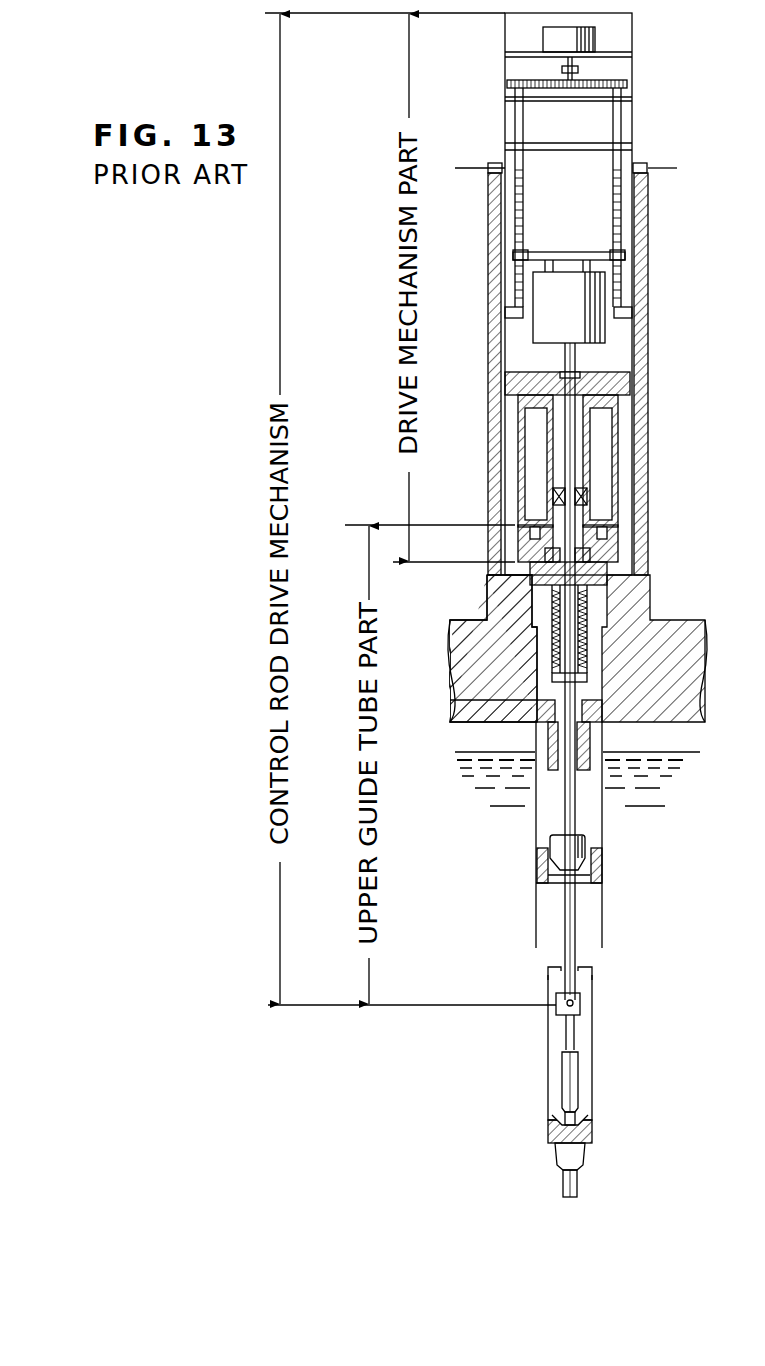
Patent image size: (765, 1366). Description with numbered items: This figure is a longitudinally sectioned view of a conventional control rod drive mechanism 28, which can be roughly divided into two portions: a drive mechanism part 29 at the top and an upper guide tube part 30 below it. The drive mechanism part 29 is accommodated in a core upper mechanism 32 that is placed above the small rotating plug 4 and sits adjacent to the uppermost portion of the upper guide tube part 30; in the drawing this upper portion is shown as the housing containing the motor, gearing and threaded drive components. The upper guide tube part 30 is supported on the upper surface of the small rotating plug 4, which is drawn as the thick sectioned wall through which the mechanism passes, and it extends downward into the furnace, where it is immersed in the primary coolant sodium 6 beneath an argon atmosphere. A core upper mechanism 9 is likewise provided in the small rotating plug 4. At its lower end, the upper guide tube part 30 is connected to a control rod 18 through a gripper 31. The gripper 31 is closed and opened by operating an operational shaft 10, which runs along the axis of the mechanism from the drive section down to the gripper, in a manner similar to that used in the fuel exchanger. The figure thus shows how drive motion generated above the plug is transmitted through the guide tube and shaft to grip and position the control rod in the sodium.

The small rotating plug 4 is at (682, 717).
The primary coolant sodium 6 is at (480, 752).
The core upper mechanism 9 is at (577, 915).
The operational shaft 10 is at (565, 932).
The control rod 18 is at (580, 1078).
The control rod drive mechanism 28 is at (633, 122).
The drive mechanism part 29 is at (620, 460).
The upper guide tube part 30 is at (603, 833).
The gripper 31 is at (575, 982).
The core upper mechanism 32 is at (628, 548).